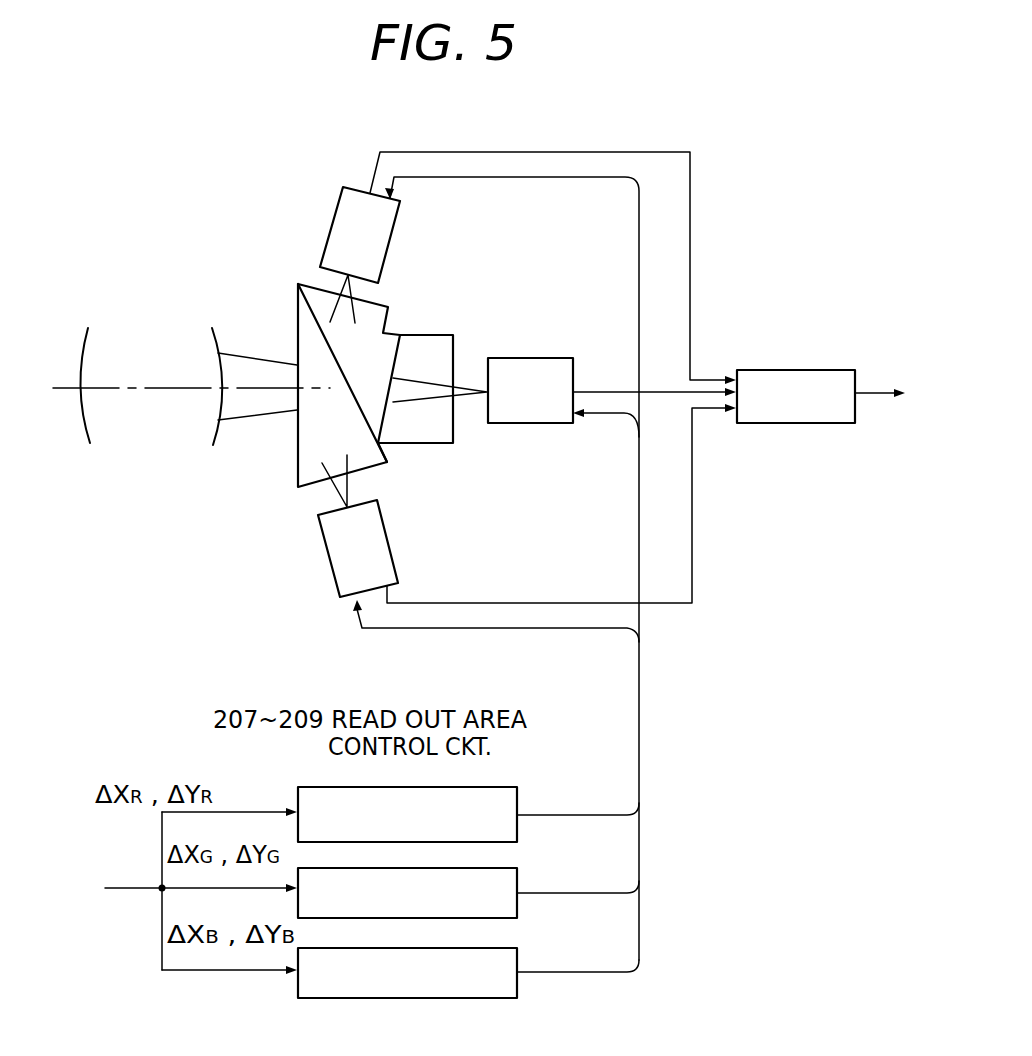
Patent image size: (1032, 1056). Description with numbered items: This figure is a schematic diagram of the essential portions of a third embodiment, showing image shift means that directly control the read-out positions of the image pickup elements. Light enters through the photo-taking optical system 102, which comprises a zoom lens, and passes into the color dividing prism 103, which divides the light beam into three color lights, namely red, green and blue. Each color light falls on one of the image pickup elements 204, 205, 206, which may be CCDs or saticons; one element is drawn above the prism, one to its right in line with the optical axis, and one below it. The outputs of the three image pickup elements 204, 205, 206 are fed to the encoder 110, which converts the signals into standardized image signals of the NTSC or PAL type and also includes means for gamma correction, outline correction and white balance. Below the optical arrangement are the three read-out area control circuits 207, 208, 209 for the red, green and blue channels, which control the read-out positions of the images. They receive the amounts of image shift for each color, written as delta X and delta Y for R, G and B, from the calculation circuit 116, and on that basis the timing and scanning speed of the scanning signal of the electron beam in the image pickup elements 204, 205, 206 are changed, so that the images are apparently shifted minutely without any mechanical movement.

The photo-taking optical system 102 is at (120, 347).
The color dividing prism 103 is at (303, 460).
The image pickup element 204 is at (388, 225).
The image pickup element 205 is at (512, 365).
The image pickup element 206 is at (382, 558).
The encoder 110 is at (755, 370).
The read-out area control circuit 207 is at (407, 814).
The read-out area control circuit 208 is at (407, 893).
The read-out area control circuit 209 is at (407, 973).
The calculation circuit 116 is at (170, 891).